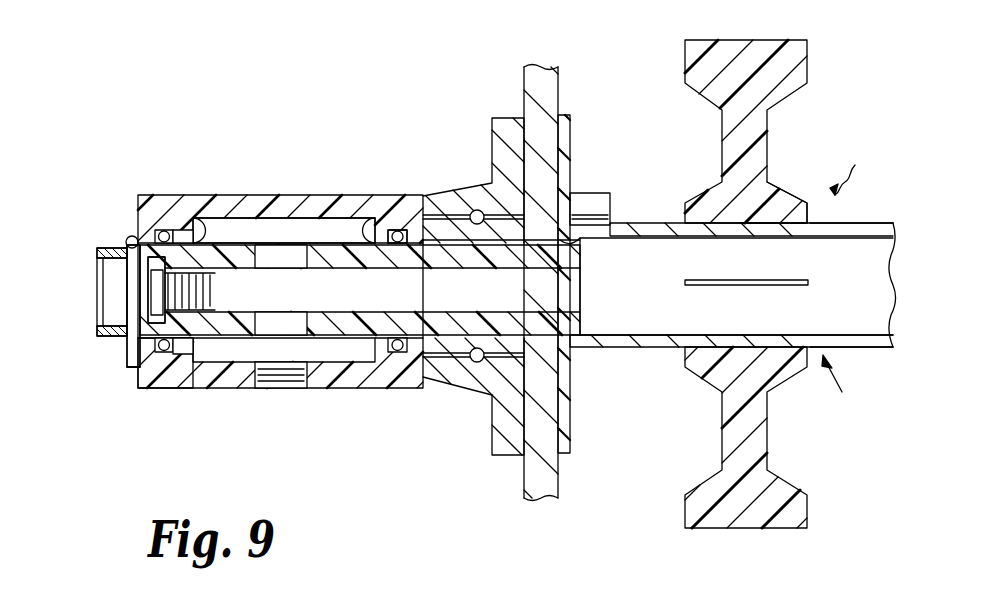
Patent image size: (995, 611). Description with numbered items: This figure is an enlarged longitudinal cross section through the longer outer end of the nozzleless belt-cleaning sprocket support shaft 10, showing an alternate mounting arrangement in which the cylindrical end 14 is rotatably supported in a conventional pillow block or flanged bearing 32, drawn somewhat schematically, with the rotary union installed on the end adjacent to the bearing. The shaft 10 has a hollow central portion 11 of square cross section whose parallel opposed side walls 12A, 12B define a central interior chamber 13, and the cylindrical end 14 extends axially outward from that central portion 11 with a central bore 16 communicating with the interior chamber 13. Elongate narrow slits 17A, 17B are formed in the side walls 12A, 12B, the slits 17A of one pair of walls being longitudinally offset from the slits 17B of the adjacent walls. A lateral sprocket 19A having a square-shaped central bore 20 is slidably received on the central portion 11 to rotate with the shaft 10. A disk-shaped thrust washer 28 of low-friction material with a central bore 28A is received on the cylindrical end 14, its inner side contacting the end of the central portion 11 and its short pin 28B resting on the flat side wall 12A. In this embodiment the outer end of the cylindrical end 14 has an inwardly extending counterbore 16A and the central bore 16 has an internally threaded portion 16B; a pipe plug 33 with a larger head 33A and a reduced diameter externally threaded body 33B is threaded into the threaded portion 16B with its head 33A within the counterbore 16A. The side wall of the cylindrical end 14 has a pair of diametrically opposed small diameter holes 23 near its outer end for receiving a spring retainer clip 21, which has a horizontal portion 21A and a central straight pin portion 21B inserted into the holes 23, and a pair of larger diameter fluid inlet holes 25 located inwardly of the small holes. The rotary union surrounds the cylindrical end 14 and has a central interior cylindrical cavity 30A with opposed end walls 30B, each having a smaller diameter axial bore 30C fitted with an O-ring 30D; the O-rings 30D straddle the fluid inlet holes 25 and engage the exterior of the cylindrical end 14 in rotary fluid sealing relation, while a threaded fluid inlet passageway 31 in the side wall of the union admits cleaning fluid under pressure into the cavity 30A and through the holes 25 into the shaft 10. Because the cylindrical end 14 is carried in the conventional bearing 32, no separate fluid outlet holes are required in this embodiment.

The nozzleless belt-cleaning sprocket support shaft 10 is at (855, 167).
The hollow central portion 11 is at (846, 382).
The side wall 12A is at (650, 223).
The side wall 12B is at (618, 350).
The central interior chamber 13 is at (643, 297).
The cylindrical end 14 is at (238, 215).
The central bore 16 is at (402, 302).
The counterbore 16A is at (110, 265).
The internally threaded portion 16B is at (212, 288).
The slits 17A is at (845, 233).
The slits 17B is at (727, 286).
The lateral sprocket 19A is at (767, 441).
The square-shaped central bore 20 is at (778, 218).
The spring retainer clip 21 is at (128, 240).
The horizontal portion 21A is at (129, 242).
The central straight pin portion 21B is at (129, 368).
The small diameter holes 23 is at (126, 244).
The fluid inlet holes 25 is at (285, 322).
The thrust washer 28 is at (565, 130).
The central bore 28A is at (572, 246).
The short pin 28B is at (592, 193).
The central interior cylindrical cavity 30A is at (306, 200).
The end walls 30B is at (200, 218).
The axial bore 30C is at (400, 245).
The O-ring 30D is at (163, 352).
The threaded fluid inlet passageway 31 is at (305, 388).
The pillow block or flanged bearing 32 is at (478, 185).
The pipe plug 33 is at (140, 303).
The head 33A is at (138, 306).
The externally threaded body 33B is at (200, 200).